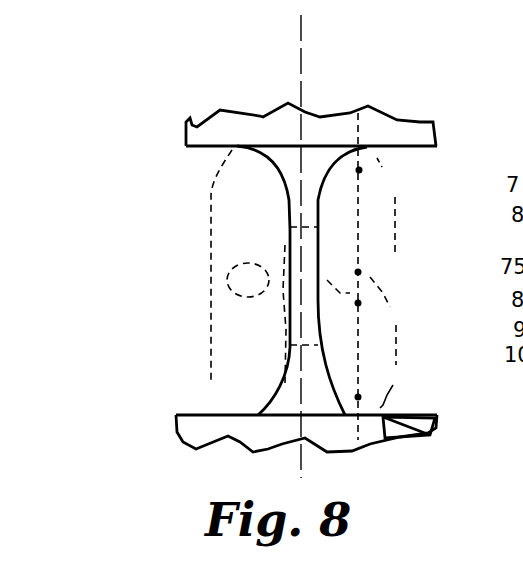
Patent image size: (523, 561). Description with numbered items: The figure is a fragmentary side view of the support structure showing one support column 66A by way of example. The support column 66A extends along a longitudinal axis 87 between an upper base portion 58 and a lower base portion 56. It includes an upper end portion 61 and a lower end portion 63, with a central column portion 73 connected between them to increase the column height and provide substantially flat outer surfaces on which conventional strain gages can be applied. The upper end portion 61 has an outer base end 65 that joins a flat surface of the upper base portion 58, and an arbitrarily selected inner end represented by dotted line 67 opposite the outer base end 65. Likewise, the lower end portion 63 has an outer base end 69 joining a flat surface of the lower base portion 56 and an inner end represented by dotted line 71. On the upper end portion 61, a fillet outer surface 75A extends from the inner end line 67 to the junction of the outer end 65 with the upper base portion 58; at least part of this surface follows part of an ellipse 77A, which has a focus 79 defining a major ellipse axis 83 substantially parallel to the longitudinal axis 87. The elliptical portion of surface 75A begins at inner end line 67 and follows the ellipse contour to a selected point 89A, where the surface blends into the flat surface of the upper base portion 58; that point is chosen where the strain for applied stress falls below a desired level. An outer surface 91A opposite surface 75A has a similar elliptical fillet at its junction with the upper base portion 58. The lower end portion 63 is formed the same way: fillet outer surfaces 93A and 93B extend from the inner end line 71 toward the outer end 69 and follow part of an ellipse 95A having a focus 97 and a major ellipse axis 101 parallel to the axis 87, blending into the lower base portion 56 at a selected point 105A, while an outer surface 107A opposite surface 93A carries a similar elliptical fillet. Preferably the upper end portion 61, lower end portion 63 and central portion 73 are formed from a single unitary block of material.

The lower base portion 56 is at (183, 441).
The upper base portion 58 is at (260, 115).
The upper end portion 61 is at (320, 183).
The lower end portion 63 is at (320, 384).
The outer base end 65 is at (320, 143).
The support column 66A is at (315, 277).
The inner end 67 is at (290, 229).
The outer base end 69 is at (325, 417).
The inner end 71 is at (290, 348).
The central column portion 73 is at (315, 277).
The fillet outer surface 75A is at (333, 173).
The ellipse 77A is at (210, 208).
The focus 79 is at (360, 168).
The major ellipse axis 83 is at (358, 223).
The longitudinal axis 87 is at (305, 47).
The selected point 89A is at (358, 168).
The outer surface 91A is at (281, 164).
The fillet outer surface 93A is at (430, 433).
The fillet outer surface 93B is at (247, 440).
The ellipse 95A is at (211, 339).
The focus 97 is at (358, 303).
The major ellipse axis 101 is at (358, 345).
The selected point 105A is at (378, 437).
The outer surface 107A is at (268, 403).